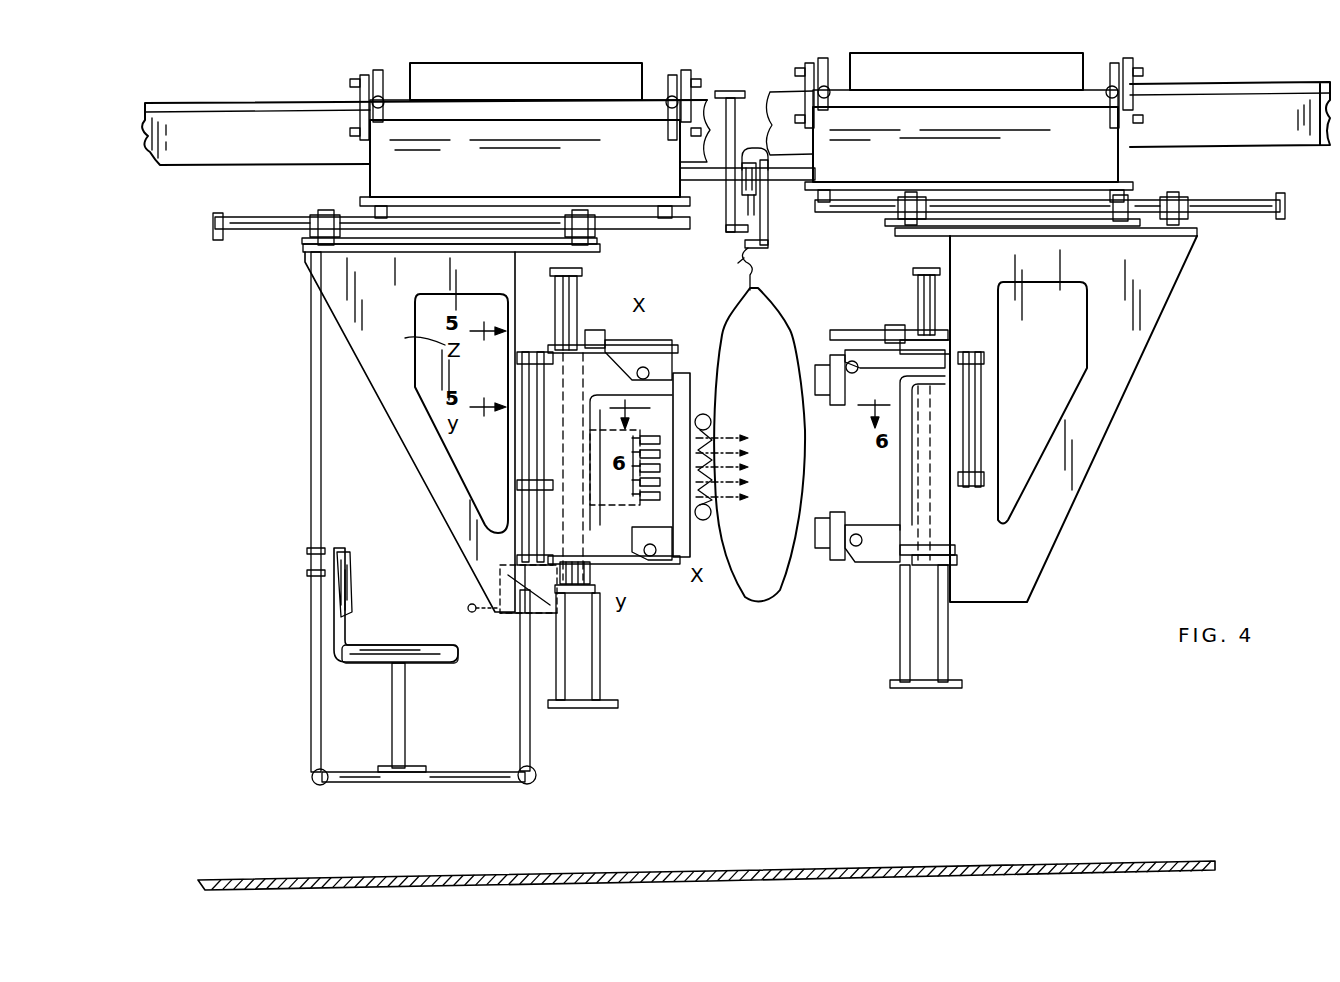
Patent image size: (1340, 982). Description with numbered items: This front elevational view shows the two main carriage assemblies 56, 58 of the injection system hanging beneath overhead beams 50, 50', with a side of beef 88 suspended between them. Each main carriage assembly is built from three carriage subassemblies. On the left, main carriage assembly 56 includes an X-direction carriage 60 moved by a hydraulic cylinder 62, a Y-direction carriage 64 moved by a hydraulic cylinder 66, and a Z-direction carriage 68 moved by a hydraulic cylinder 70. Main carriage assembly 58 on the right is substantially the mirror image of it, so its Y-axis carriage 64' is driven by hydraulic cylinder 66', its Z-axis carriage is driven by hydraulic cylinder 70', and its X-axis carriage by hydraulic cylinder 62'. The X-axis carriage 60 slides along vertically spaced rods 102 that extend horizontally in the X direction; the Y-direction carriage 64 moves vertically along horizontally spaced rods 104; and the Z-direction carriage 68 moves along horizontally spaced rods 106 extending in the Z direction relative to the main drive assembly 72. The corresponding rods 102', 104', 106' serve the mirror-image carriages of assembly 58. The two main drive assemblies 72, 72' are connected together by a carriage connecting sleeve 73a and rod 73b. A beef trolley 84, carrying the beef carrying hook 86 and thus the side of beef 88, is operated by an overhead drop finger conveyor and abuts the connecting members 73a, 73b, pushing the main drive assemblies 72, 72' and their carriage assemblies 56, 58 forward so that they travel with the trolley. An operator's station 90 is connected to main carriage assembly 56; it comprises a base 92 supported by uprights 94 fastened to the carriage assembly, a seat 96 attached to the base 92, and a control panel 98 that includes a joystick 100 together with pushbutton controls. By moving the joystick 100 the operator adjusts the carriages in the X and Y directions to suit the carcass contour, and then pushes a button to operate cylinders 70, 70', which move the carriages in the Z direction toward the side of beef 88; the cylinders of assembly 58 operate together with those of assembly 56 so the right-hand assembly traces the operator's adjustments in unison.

The overhead track beam 50 is at (477, 145).
The overhead track beam 50' is at (1230, 127).
The main carriage assembly 56 is at (605, 640).
The main carriage assembly 58 is at (1045, 575).
The X-direction carriage 60 is at (690, 565).
The hydraulic cylinder 62 is at (613, 317).
The hydraulic cylinder 62' is at (889, 312).
The Y-direction carriage 64 is at (617, 499).
The Y-axis carriage 64' is at (904, 478).
The hydraulic cylinder 66 is at (510, 458).
The hydraulic cylinder 66' is at (1000, 419).
The Z-direction carriage 68 is at (395, 440).
The hydraulic cylinder 70 is at (449, 255).
The hydraulic cylinder 70' is at (1012, 244).
The main drive assembly 72 is at (525, 166).
The main drive assembly 72' is at (969, 158).
The carriage connecting sleeve 73a is at (710, 88).
The carriage connecting rod 73b is at (770, 150).
The beef trolley 84 is at (750, 160).
The beef carrying hook 86 is at (790, 248).
The side of beef 88 is at (795, 475).
The operator's station 90 is at (345, 630).
The base 92 is at (455, 772).
The uprights 94 is at (308, 495).
The seat 96 is at (400, 655).
The control panel 98 is at (520, 600).
The joystick 100 is at (470, 602).
The rods 102 is at (775, 456).
The rods 102' is at (872, 520).
The rods 104 is at (530, 309).
The rods 104' is at (979, 303).
The rods 106 is at (451, 240).
The rods 106' is at (1050, 219).